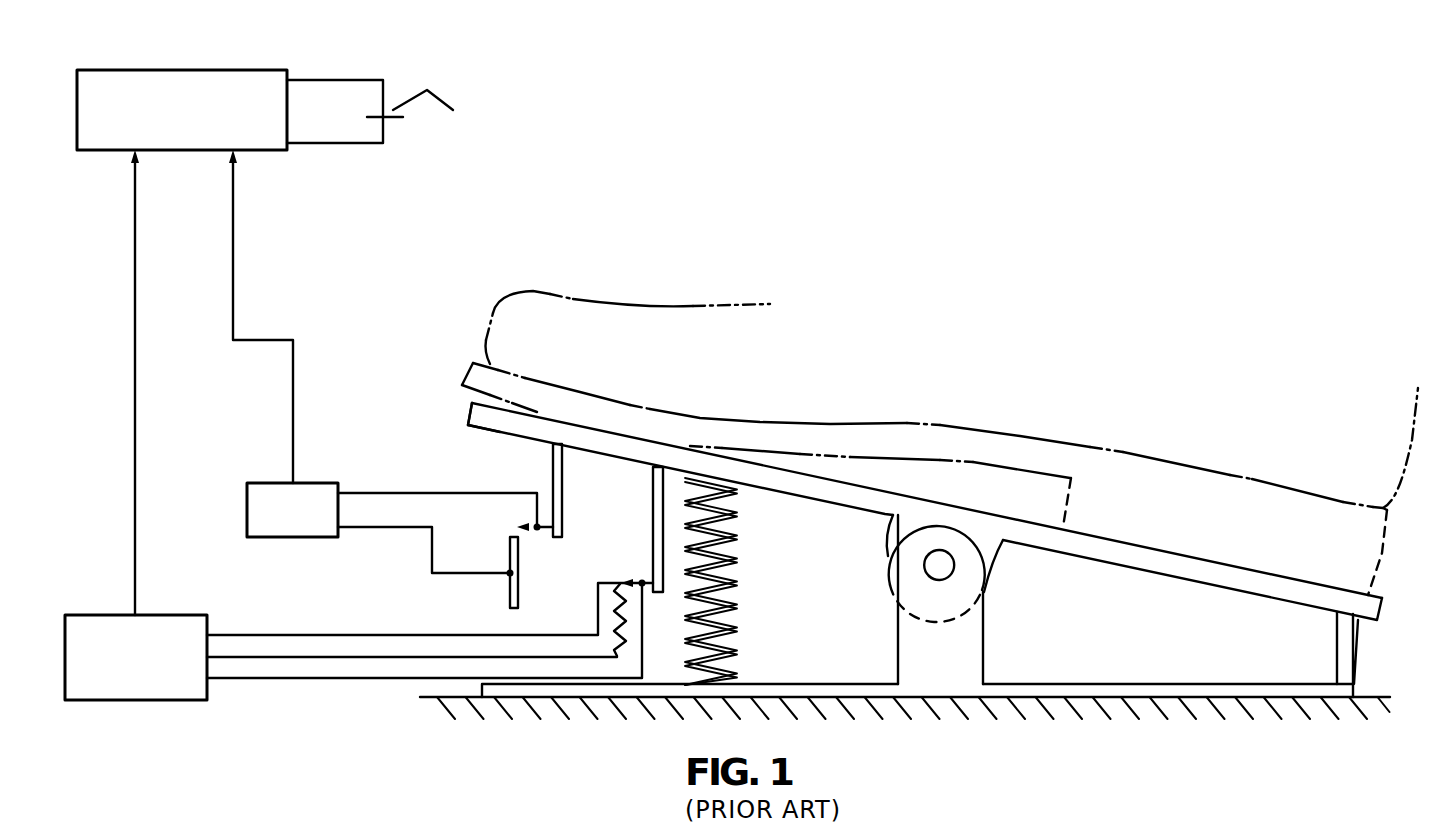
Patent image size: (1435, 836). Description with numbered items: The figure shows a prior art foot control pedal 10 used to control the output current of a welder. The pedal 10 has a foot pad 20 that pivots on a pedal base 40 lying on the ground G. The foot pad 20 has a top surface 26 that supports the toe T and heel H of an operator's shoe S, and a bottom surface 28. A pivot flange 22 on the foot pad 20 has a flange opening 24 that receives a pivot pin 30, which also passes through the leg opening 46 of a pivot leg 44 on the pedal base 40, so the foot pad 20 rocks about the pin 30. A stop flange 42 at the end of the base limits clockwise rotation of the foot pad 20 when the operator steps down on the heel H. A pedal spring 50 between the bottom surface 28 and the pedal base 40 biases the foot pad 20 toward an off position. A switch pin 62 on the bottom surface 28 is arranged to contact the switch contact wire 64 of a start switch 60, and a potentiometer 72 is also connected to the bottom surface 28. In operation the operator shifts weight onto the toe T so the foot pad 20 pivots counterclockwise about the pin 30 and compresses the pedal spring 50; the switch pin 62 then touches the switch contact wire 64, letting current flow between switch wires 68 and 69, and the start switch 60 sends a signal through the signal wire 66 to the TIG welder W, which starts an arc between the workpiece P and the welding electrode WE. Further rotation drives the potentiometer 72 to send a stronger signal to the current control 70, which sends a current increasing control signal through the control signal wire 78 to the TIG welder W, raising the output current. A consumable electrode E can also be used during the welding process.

The pedal 10 is at (985, 470).
The foot pad 20 is at (871, 476).
The pivot flange 22 is at (895, 530).
The flange opening 24 is at (955, 562).
The top surface 26 is at (815, 476).
The bottom surface 28 is at (488, 429).
The pivot pin 30 is at (925, 560).
The pedal base 40 is at (1100, 669).
The stop flange 42 is at (1343, 643).
The pivot leg 44 is at (967, 653).
The leg opening 46 is at (928, 577).
The pedal spring 50 is at (732, 647).
The start switch 60 is at (260, 483).
The switch pin 62 is at (557, 490).
The switch contact wire 64 is at (510, 590).
The signal wire 66 is at (233, 243).
The switch wire 68 is at (362, 493).
The switch wire 69 is at (363, 527).
The current control 70 is at (113, 613).
The potentiometer 72 is at (617, 620).
The control signal wire 78 is at (133, 427).
The TIG welder W is at (190, 68).
The welding electrode WE is at (390, 103).
The consumable electrode E is at (433, 108).
The workpiece P is at (393, 122).
The shoe S is at (635, 292).
The toe T is at (475, 363).
The heel H is at (1248, 490).
The ground G is at (1367, 695).